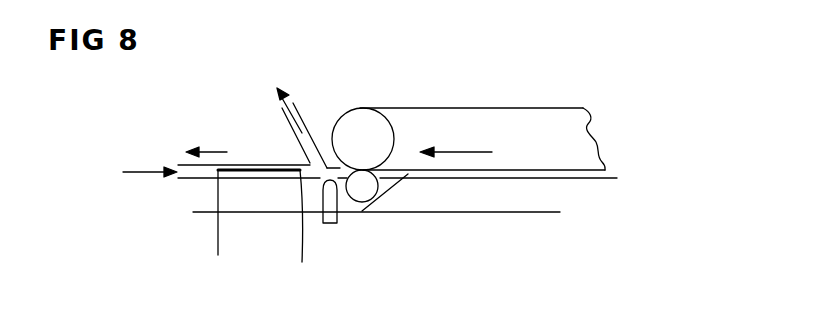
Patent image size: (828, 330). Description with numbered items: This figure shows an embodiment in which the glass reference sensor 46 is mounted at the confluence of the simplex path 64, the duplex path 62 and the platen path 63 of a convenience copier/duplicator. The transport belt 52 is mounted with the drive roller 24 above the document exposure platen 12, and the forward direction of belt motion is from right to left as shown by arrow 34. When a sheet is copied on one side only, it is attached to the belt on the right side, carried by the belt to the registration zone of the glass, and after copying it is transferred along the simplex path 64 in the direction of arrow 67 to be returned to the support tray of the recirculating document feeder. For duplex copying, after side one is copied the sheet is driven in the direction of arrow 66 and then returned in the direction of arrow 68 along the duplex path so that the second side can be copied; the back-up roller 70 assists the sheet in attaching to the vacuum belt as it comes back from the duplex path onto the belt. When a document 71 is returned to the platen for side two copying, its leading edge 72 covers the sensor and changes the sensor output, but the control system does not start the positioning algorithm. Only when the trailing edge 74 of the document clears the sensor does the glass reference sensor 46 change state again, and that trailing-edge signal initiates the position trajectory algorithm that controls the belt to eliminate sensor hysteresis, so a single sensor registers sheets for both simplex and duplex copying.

The document exposure platen 12 is at (502, 179).
The drive roller 24 is at (365, 127).
The arrow 34 is at (466, 153).
The glass reference sensor 46 is at (332, 218).
The transport belt 52 is at (582, 137).
The duplex path 62 is at (307, 123).
The platen path 63 is at (410, 174).
The simplex path 64 is at (197, 178).
The arrow 66 is at (288, 102).
The arrow 67 is at (206, 144).
The arrow 68 is at (140, 166).
The back-up roller 70 is at (365, 193).
The document 71 is at (257, 168).
The leading edge 72 is at (301, 226).
The trailing edge 74 is at (224, 222).